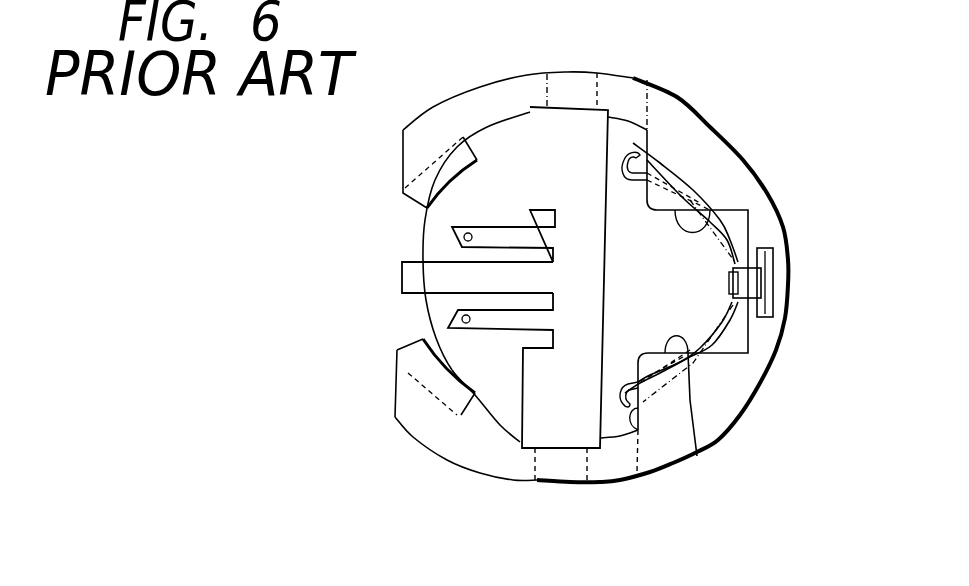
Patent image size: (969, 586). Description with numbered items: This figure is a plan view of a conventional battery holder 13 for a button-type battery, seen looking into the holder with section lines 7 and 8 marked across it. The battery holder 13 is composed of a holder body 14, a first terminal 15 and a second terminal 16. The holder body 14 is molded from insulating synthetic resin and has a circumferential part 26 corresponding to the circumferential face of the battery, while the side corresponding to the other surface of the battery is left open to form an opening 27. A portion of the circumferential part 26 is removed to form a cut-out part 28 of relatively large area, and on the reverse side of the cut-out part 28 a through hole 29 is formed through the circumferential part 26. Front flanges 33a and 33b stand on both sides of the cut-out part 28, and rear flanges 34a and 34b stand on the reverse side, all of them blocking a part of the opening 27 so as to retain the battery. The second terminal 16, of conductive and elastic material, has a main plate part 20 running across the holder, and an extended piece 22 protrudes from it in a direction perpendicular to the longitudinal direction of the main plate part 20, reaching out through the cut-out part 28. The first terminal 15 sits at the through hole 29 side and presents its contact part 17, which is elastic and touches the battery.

The section line 7- 7 is at (377, 277).
The section line 8- 8 is at (570, 62).
The battery holder 13 is at (705, 110).
The holder body 14 is at (461, 118).
The first terminal 15 is at (730, 242).
The second terminal 16 is at (543, 118).
The contact part 17 is at (713, 330).
The main plate part 20 is at (598, 253).
The extended piece 22 is at (414, 270).
The circumferential part 26 is at (512, 486).
The opening 27 is at (490, 433).
The cut-out part 28 is at (413, 310).
The through hole 29 is at (775, 257).
The front flange 33a is at (415, 200).
The front flange 33b is at (410, 336).
The rear flange 34a is at (700, 217).
The rear flange 34b is at (697, 456).